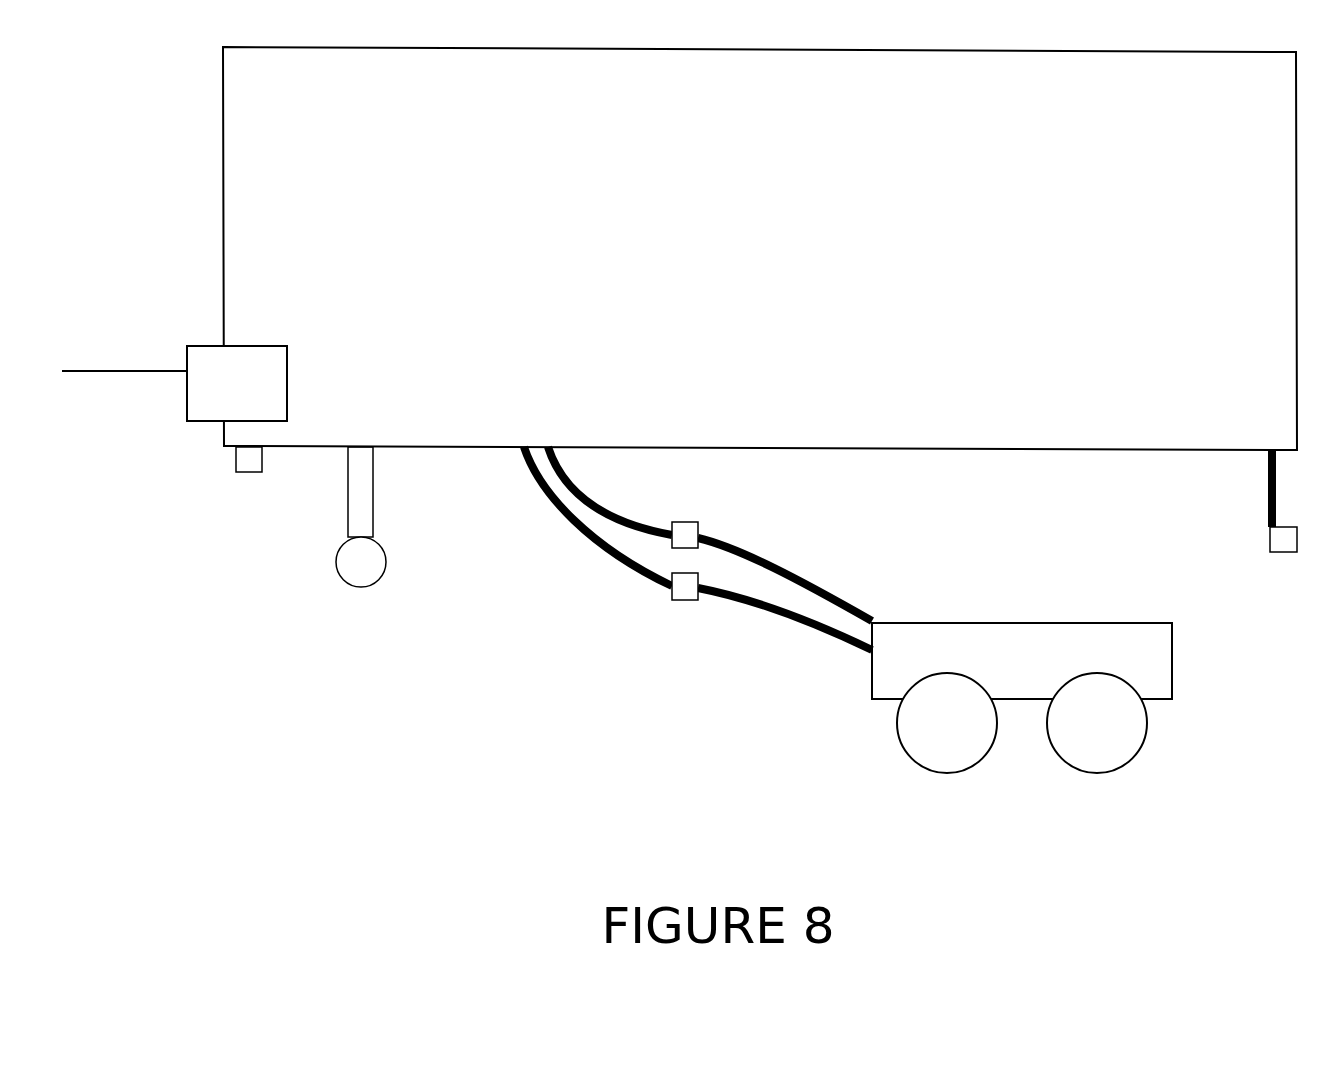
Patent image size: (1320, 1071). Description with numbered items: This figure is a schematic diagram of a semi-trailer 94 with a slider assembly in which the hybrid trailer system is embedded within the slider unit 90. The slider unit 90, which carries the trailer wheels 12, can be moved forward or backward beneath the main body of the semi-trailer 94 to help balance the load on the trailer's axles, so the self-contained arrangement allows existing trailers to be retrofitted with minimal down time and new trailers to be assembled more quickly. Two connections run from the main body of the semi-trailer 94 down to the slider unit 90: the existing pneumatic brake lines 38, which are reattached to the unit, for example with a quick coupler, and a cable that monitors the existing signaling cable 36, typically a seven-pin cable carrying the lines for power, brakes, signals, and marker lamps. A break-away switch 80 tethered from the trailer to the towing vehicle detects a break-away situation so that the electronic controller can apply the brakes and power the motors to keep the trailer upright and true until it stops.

The semi-trailer 94 is at (763, 169).
The break-away switch 80 is at (262, 399).
The signaling cable 36 is at (640, 522).
The pneumatic brake lines 38 is at (602, 541).
The slider unit 90 is at (1035, 672).
The trailer wheels 12 is at (962, 737).